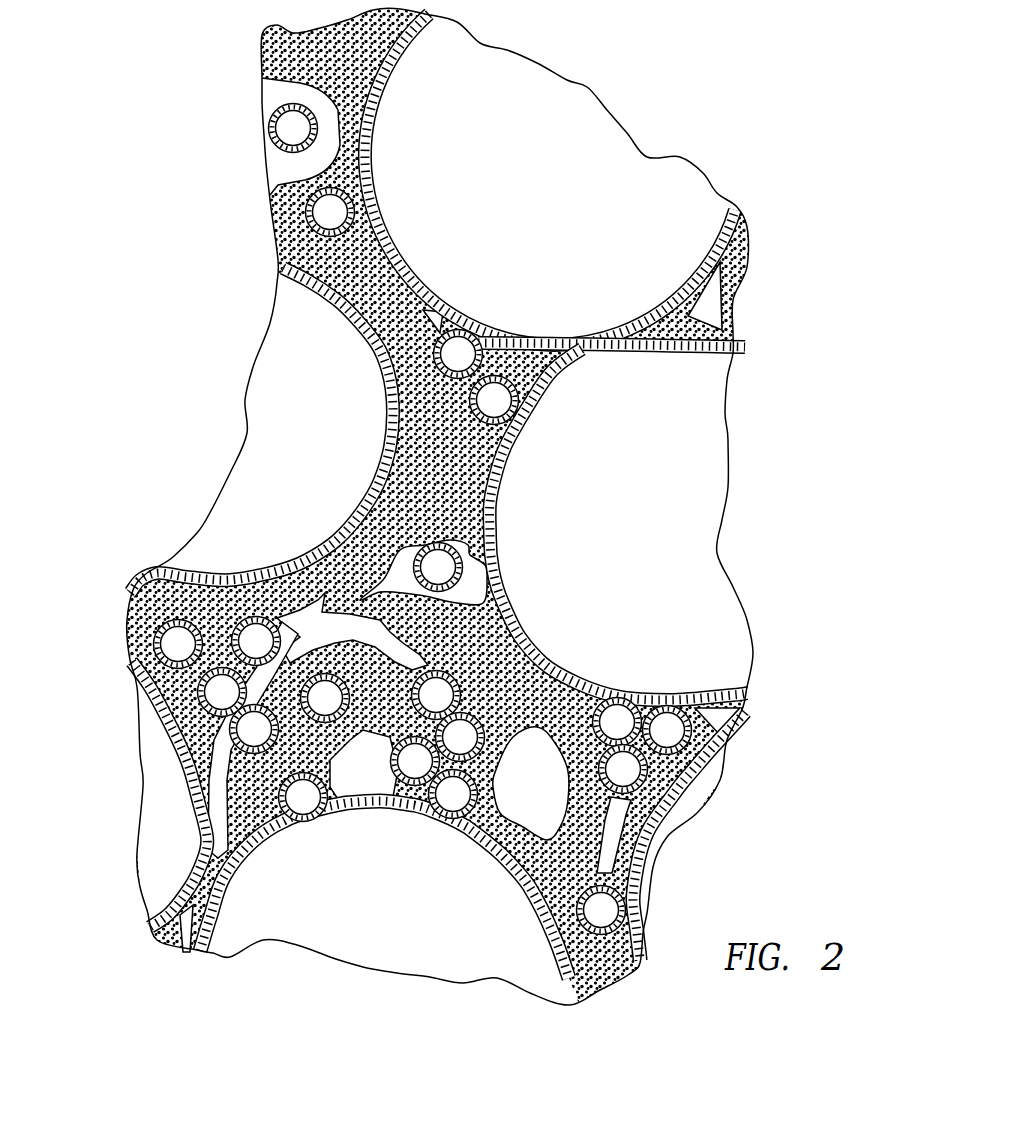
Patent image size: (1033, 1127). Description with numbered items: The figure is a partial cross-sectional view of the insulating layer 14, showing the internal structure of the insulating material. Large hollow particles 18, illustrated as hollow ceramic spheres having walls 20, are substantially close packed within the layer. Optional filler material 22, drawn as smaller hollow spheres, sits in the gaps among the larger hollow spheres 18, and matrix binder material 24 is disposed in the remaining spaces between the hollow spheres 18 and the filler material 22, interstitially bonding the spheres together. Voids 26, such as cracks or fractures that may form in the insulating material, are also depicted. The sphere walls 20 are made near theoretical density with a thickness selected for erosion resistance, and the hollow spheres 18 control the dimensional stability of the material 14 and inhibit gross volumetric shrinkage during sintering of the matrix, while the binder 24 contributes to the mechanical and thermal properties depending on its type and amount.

The insulating layer 14 is at (180, 101).
The hollow particles 18 is at (569, 202).
The sphere walls 20 is at (373, 183).
The filler material 22 is at (327, 213).
The matrix binder material 24 is at (158, 575).
The voids 26 is at (545, 790).